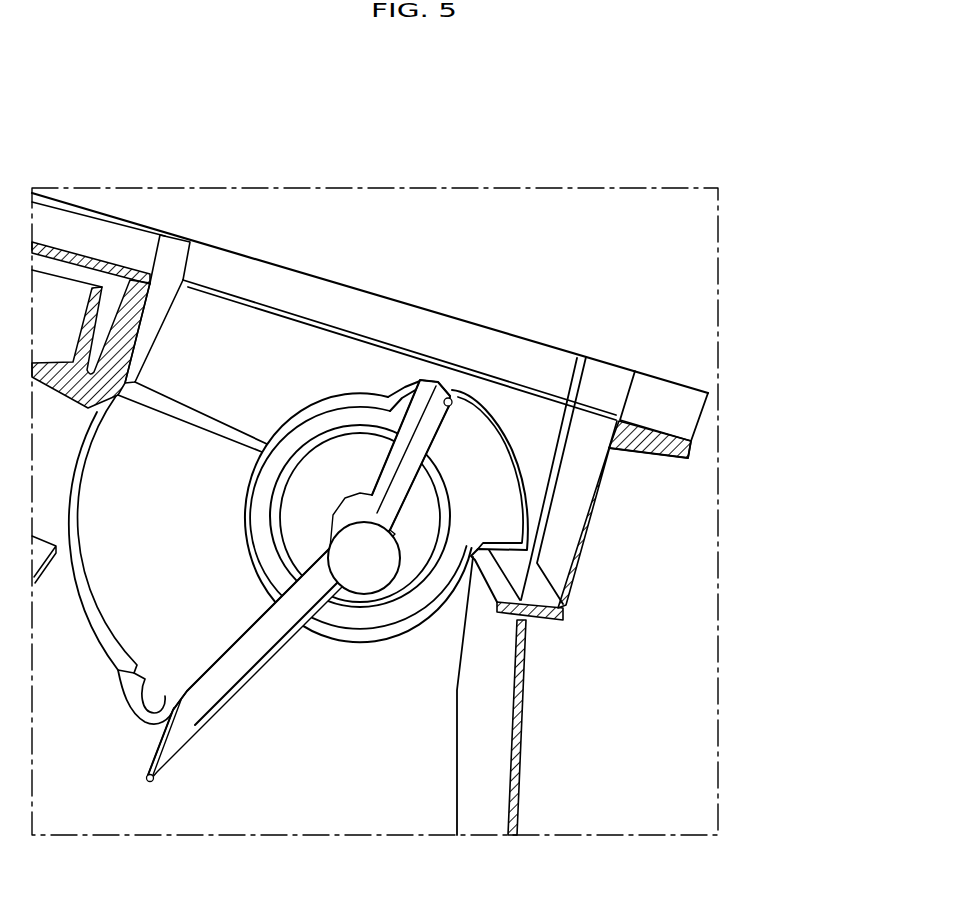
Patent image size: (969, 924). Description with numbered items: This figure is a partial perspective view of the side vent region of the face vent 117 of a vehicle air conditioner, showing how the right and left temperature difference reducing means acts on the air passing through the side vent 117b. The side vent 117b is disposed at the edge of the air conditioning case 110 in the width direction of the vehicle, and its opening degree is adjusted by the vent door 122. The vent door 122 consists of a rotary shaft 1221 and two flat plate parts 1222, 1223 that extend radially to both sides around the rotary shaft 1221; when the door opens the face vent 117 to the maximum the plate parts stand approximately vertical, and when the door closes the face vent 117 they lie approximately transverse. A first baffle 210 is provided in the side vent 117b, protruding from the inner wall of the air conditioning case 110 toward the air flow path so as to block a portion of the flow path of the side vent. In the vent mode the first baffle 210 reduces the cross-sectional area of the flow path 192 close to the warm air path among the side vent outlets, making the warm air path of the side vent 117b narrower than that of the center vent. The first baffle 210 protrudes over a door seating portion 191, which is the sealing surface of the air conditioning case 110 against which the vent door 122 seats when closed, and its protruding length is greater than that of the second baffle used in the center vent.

The face vent 117 is at (370, 288).
The side vent 117b is at (337, 352).
The flat plate part 1222 is at (430, 383).
The flow path 192 is at (428, 525).
The air conditioning case 110 is at (593, 522).
The door seating portion 191 is at (530, 603).
The first baffle 210 is at (507, 611).
The vent door 122 is at (327, 493).
The flat plate part 1223 is at (278, 658).
The rotary shaft 1221 is at (364, 558).